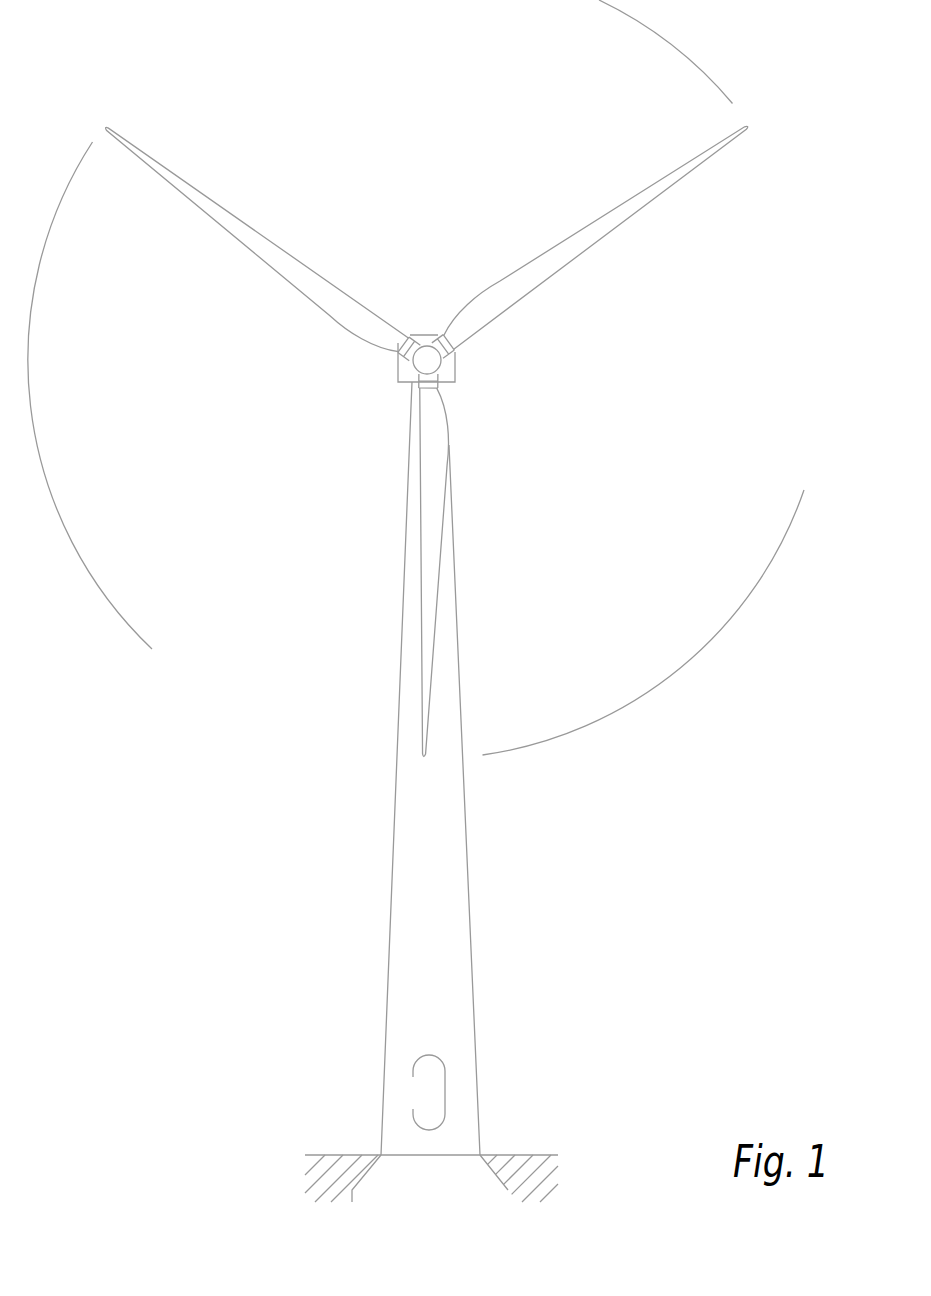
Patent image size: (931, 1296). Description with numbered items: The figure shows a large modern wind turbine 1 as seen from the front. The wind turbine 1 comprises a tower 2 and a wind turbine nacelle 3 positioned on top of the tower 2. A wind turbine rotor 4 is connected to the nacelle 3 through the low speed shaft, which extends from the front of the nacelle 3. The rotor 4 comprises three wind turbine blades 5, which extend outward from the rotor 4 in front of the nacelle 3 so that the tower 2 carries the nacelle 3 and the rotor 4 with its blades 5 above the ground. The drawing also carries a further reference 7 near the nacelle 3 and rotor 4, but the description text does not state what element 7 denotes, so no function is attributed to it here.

The wind turbine 1 is at (416, 577).
The tower 2 is at (460, 848).
The wind turbine nacelle 3 is at (457, 378).
The wind turbine rotor 4 is at (427, 347).
The wind turbine blades 5 is at (428, 610).
The rotor 7 is at (399, 357).